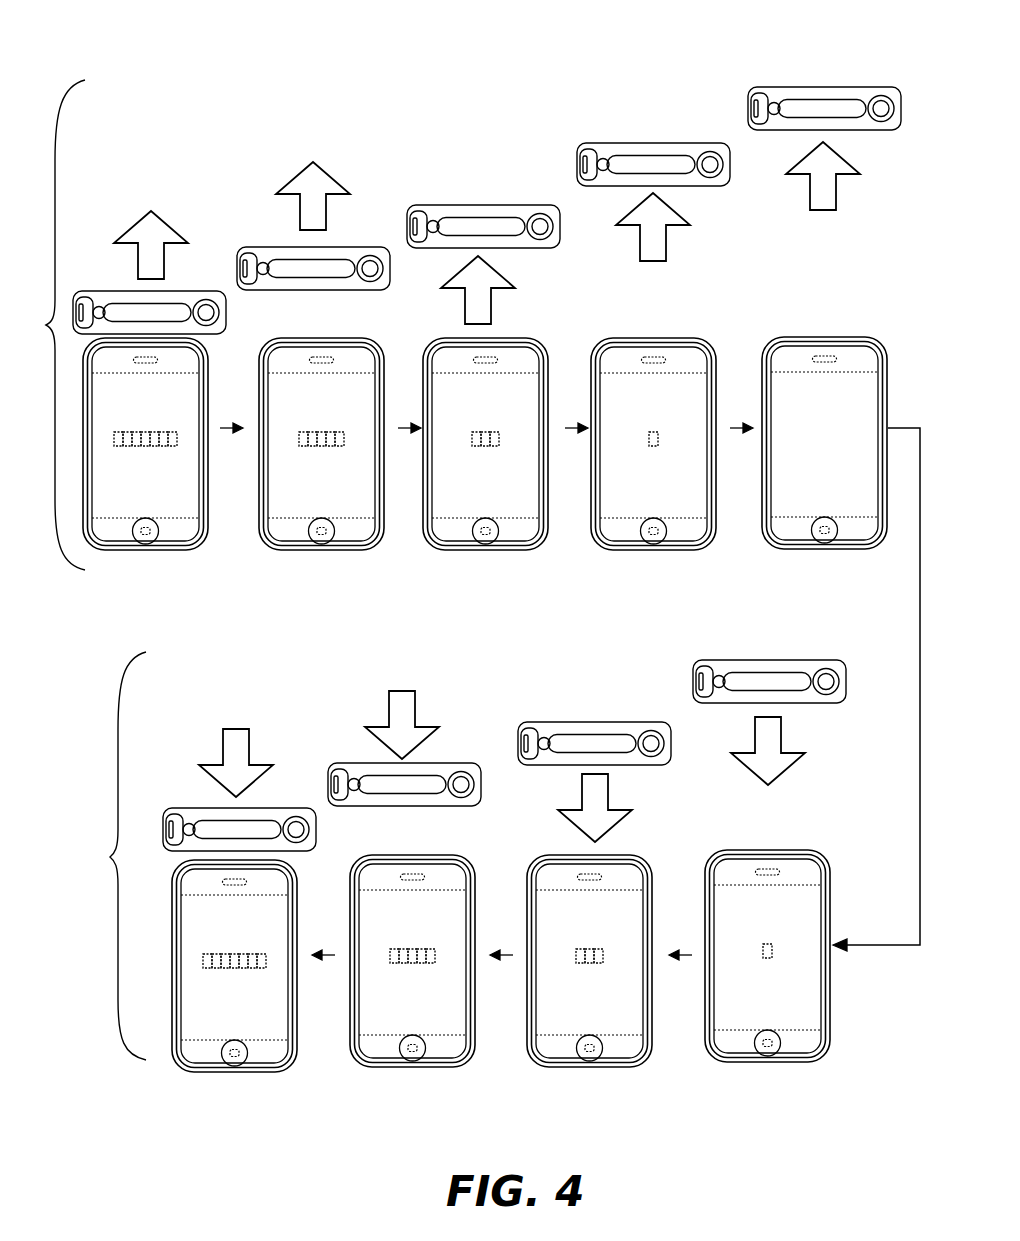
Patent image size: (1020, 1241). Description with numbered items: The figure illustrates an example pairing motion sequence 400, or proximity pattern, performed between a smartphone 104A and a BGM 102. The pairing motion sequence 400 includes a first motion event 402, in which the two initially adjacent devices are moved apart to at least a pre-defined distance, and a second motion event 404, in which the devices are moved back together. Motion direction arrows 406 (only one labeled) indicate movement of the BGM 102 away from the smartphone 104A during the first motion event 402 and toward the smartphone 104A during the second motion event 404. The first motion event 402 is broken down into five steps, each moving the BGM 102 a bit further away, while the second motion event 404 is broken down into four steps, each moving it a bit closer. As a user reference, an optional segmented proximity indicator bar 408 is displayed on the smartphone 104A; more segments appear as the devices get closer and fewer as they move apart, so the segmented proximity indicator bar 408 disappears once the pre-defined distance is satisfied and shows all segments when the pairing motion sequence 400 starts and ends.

The pairing motion sequence 400 is at (228, 56).
The first motion event 402 is at (46, 325).
The second motion event 404 is at (99, 856).
The motion direction arrows 406 is at (178, 229).
The BGM 102 is at (100, 291).
The segmented proximity indicator bar 408 is at (173, 447).
The smartphone 104A is at (173, 550).